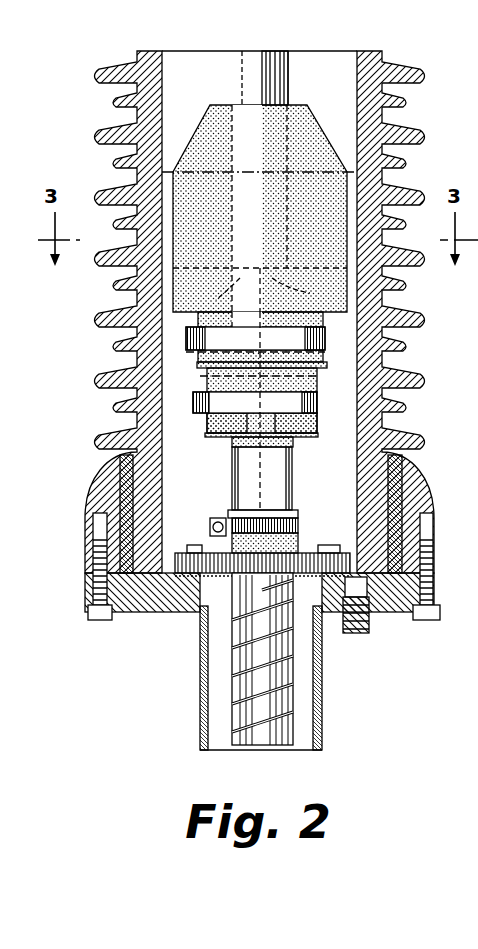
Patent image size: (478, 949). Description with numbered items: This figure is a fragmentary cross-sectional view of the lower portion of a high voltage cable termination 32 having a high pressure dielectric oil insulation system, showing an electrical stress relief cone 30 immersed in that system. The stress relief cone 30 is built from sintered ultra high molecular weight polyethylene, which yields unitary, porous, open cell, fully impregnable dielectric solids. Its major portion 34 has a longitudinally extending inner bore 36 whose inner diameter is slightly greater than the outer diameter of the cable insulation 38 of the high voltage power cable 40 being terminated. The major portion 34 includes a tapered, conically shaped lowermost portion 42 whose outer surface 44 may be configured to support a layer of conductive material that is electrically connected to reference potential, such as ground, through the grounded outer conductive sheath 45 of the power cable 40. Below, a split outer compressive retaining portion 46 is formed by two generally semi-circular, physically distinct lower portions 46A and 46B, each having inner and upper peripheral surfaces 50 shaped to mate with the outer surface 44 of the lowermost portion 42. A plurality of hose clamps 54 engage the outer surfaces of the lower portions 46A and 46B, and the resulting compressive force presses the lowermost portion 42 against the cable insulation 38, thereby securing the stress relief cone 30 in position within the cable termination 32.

The electrical stress relief cone 30 is at (319, 103).
The cable termination 32 is at (106, 62).
The major portion 34 is at (196, 130).
The inner bore 36 is at (290, 88).
The cable insulation 38 is at (255, 68).
The high voltage power cable 40 is at (230, 676).
The lowermost portion 42 is at (186, 352).
The outer surface 44 is at (320, 376).
The outer conductive sheath 45 is at (294, 698).
The outer compressive retaining portion 46 is at (204, 423).
The lower portion 46A is at (212, 438).
The lower portion 46B is at (319, 431).
The inner and upper peripheral surfaces 50 is at (272, 276).
The hose clamps 54 is at (326, 335).